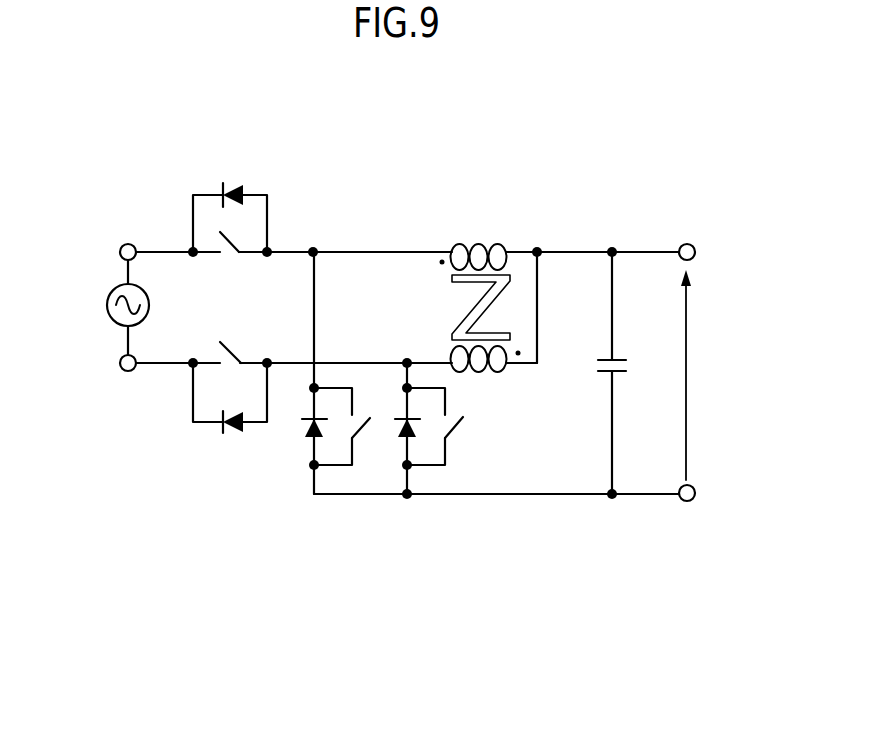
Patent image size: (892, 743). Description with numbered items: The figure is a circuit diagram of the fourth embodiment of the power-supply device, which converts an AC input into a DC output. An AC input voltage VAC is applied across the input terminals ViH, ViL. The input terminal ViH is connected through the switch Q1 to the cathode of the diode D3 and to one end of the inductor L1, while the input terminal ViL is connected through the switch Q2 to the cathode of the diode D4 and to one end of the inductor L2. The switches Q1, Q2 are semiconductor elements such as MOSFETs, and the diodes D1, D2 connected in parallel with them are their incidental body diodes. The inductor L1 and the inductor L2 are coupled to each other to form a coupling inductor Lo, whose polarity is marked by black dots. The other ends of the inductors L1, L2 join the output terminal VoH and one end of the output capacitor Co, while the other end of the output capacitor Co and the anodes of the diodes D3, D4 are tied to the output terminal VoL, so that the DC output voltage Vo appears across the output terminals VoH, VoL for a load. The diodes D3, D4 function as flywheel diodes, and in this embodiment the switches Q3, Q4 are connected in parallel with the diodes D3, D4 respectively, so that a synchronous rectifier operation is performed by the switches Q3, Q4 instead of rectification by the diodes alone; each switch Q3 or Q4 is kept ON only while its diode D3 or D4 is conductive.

The AC input voltage VAC is at (108, 300).
The input terminal ViH is at (128, 243).
The input terminal ViL is at (123, 375).
The diode D1 is at (250, 190).
The switch Q1 is at (239, 252).
The switch Q2 is at (232, 352).
The diode D2 is at (223, 430).
The diode D3 is at (305, 433).
The switch Q3 is at (362, 428).
The diode D4 is at (402, 432).
The switch Q4 is at (453, 430).
The inductor L1 is at (478, 247).
The inductor L2 is at (483, 368).
The coupling inductor Lo is at (451, 318).
The output capacitor Co is at (617, 357).
The DC output voltage Vo is at (703, 375).
The output terminal VoH is at (698, 243).
The output terminal VoL is at (698, 485).